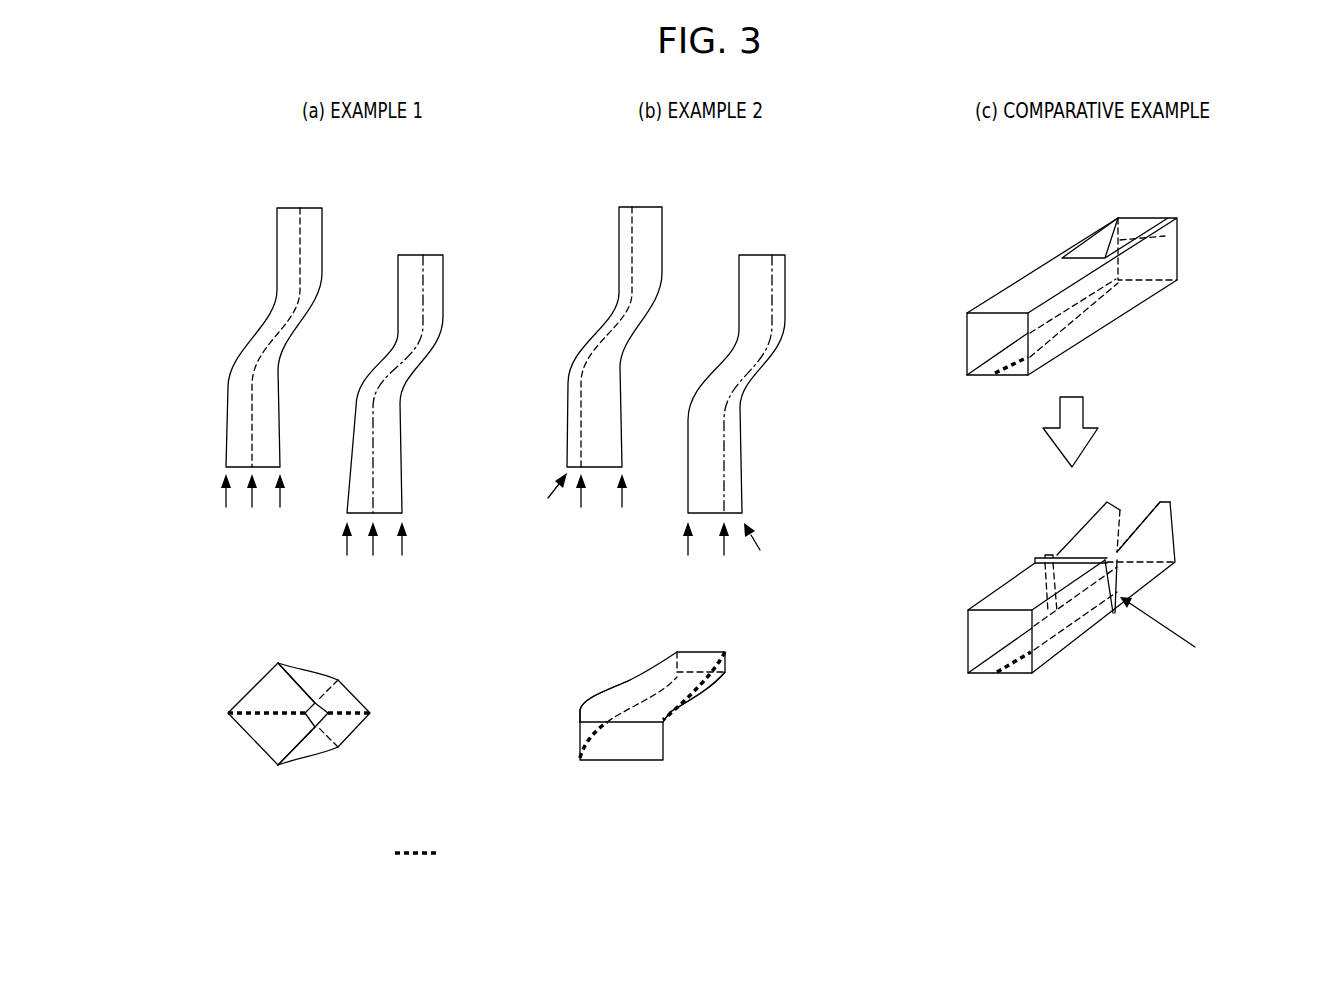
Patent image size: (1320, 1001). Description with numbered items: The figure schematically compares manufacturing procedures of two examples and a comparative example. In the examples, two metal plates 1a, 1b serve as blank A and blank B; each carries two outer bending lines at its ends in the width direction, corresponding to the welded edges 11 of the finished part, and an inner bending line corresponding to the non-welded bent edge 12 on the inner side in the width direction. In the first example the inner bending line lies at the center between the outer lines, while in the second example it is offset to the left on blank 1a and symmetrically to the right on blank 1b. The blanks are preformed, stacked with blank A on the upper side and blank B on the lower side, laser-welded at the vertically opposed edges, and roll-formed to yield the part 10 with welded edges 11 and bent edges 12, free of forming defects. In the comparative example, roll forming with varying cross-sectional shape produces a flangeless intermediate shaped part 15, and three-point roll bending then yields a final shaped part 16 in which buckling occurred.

The metal plate (blank A) 1a is at (322, 283).
The metal plate (blank B) 1b is at (400, 428).
The part 10 is at (326, 664).
The welded edge 11 is at (255, 715).
The non-welded bent edge 12 is at (310, 672).
The flangeless intermediate shaped part 15 is at (1117, 348).
The final shaped part 16 is at (1094, 657).